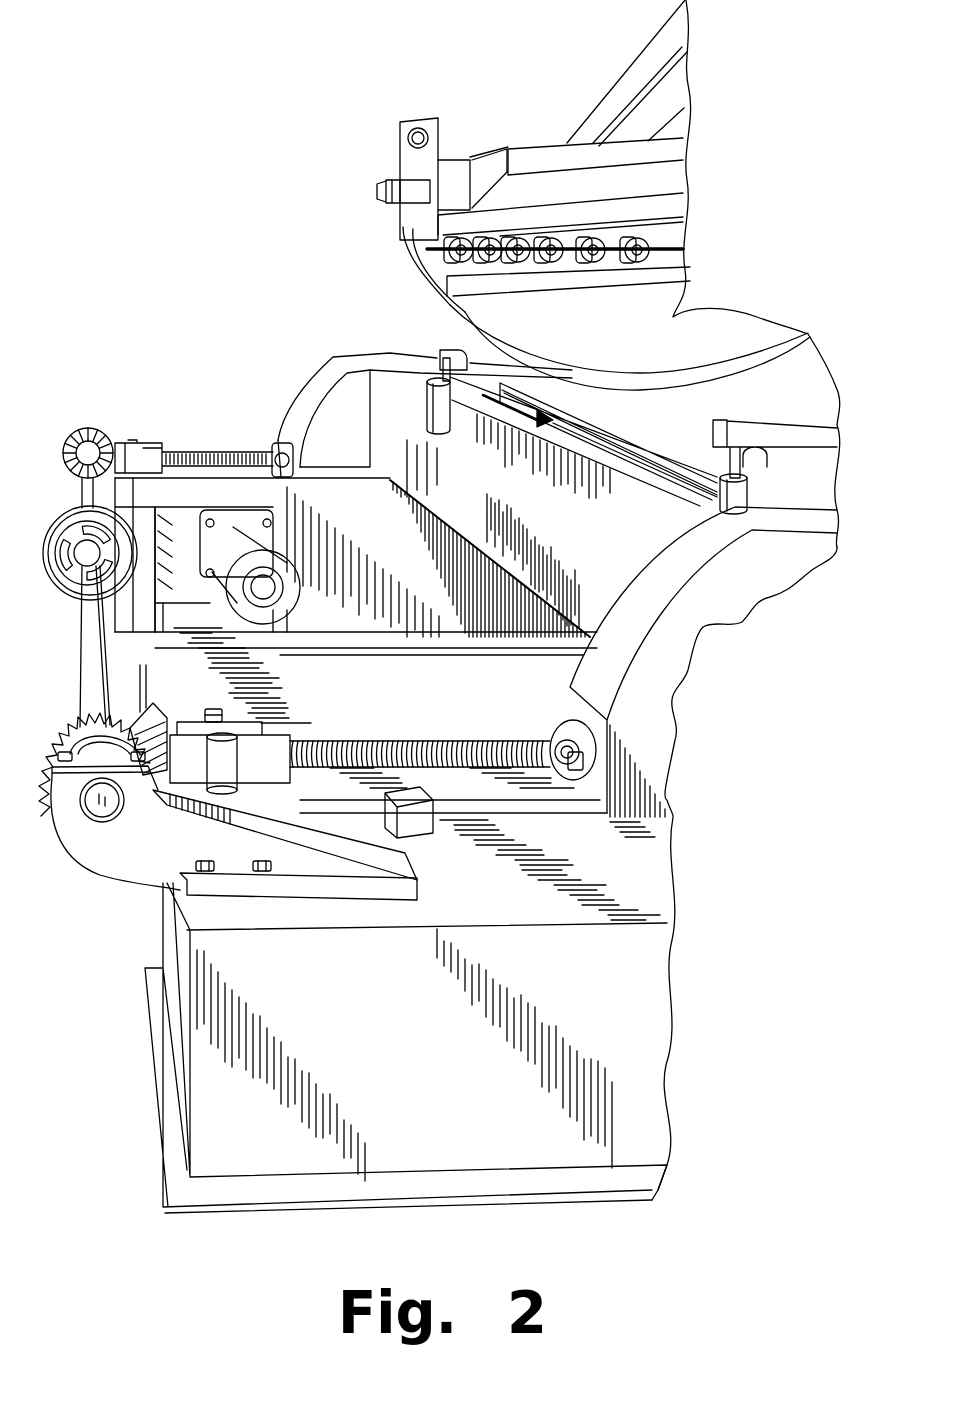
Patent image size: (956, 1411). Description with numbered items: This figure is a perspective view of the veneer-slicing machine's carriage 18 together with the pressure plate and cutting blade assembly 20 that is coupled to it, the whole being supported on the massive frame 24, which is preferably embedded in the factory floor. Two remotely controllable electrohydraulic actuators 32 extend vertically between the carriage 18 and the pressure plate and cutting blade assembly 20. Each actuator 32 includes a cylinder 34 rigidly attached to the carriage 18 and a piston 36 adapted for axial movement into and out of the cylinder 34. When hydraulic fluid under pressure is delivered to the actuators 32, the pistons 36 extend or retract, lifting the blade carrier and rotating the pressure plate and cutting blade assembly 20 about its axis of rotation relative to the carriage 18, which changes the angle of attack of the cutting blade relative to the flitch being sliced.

The carriage 18 is at (304, 362).
The pressure plate and cutting blade assembly 20 is at (476, 104).
The frame 24 is at (217, 1106).
The electrohydraulic actuator 32 is at (411, 406).
The cylinder 34 is at (437, 428).
The piston 36 is at (432, 349).